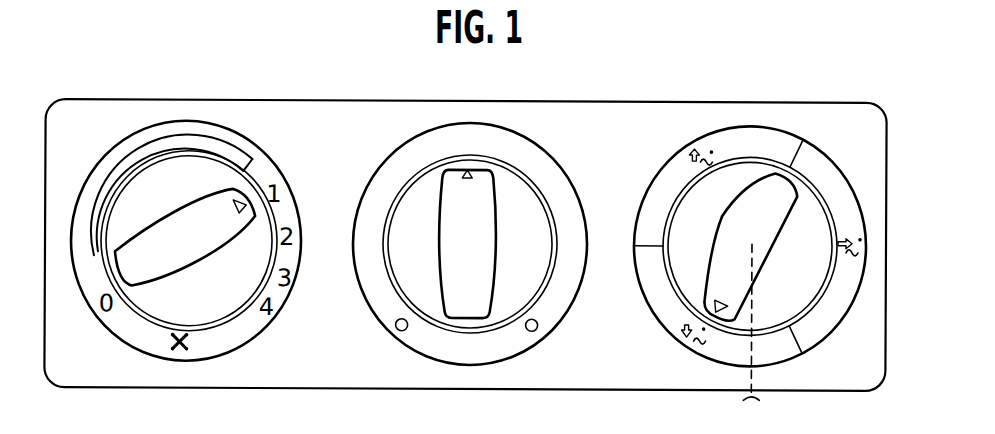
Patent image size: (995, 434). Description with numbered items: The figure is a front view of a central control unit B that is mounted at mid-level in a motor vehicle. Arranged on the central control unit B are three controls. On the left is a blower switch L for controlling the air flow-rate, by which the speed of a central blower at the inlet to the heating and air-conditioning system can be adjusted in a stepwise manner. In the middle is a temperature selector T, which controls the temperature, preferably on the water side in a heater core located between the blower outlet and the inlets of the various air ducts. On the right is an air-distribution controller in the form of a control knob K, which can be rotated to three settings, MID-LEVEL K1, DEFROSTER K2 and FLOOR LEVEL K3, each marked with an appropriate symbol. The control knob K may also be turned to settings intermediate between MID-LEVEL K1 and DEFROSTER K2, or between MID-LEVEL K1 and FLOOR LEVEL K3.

The central control unit B is at (608, 110).
The blower switch L is at (180, 140).
The temperature selector T is at (468, 127).
The control knob K is at (720, 277).
The MID-LEVEL setting K1 is at (865, 260).
The DEFROSTER setting K2 is at (677, 160).
The FLOOR LEVEL setting K3 is at (698, 328).